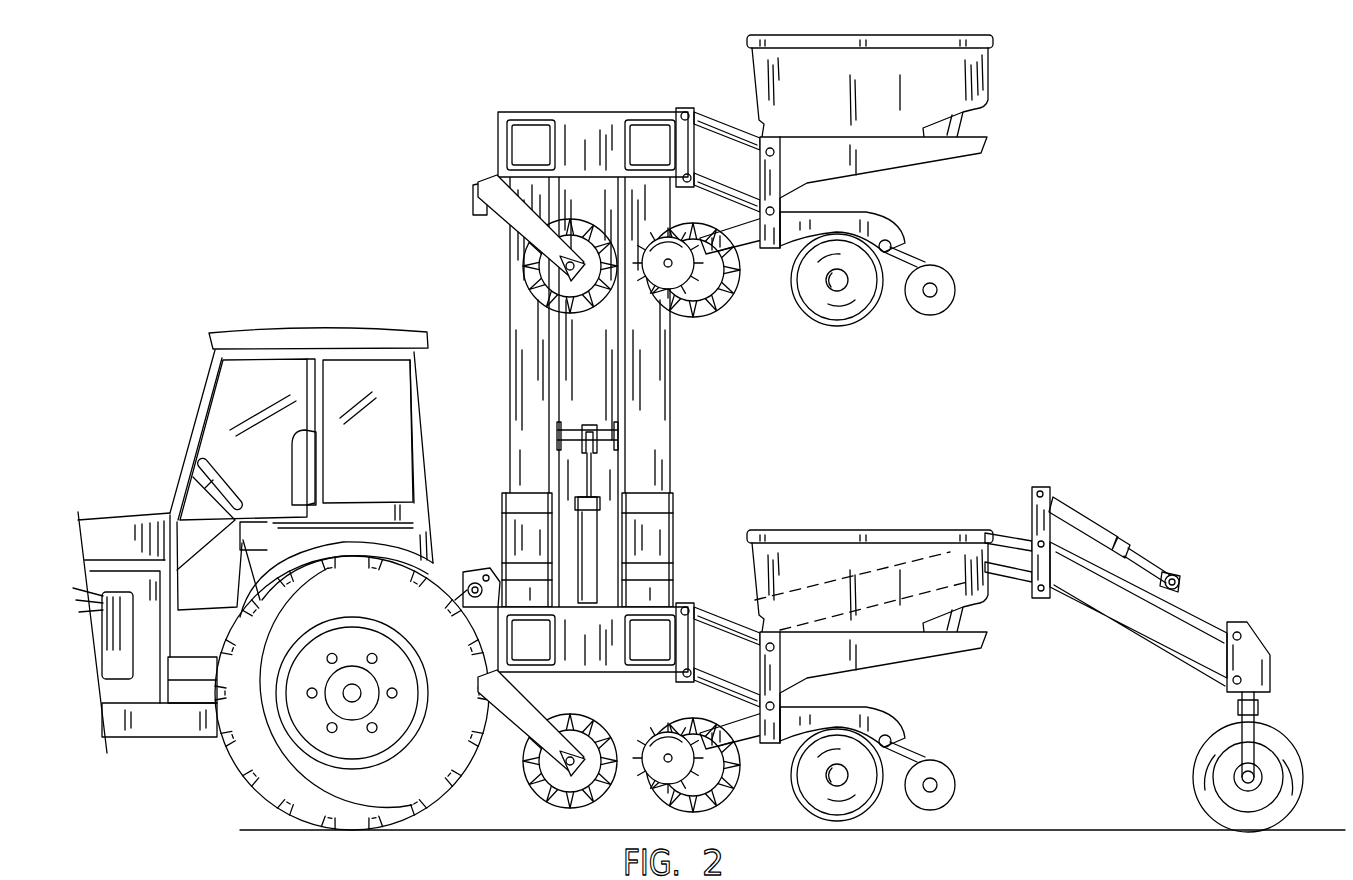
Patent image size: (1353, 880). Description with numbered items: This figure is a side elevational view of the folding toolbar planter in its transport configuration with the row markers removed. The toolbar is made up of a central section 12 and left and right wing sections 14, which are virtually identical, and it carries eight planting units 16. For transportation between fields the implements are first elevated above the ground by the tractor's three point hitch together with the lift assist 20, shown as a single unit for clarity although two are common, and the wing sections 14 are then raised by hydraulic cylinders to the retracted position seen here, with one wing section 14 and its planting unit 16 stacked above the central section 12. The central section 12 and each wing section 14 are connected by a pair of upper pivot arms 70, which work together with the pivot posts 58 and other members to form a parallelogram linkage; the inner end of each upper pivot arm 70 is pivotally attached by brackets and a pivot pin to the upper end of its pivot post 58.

The central section 12 is at (582, 663).
The wing section 14 is at (500, 118).
The planting unit 16 is at (987, 147).
The lift assist 20 is at (1052, 486).
The pivot post 58 is at (657, 537).
The upper pivot arm 70 is at (650, 428).